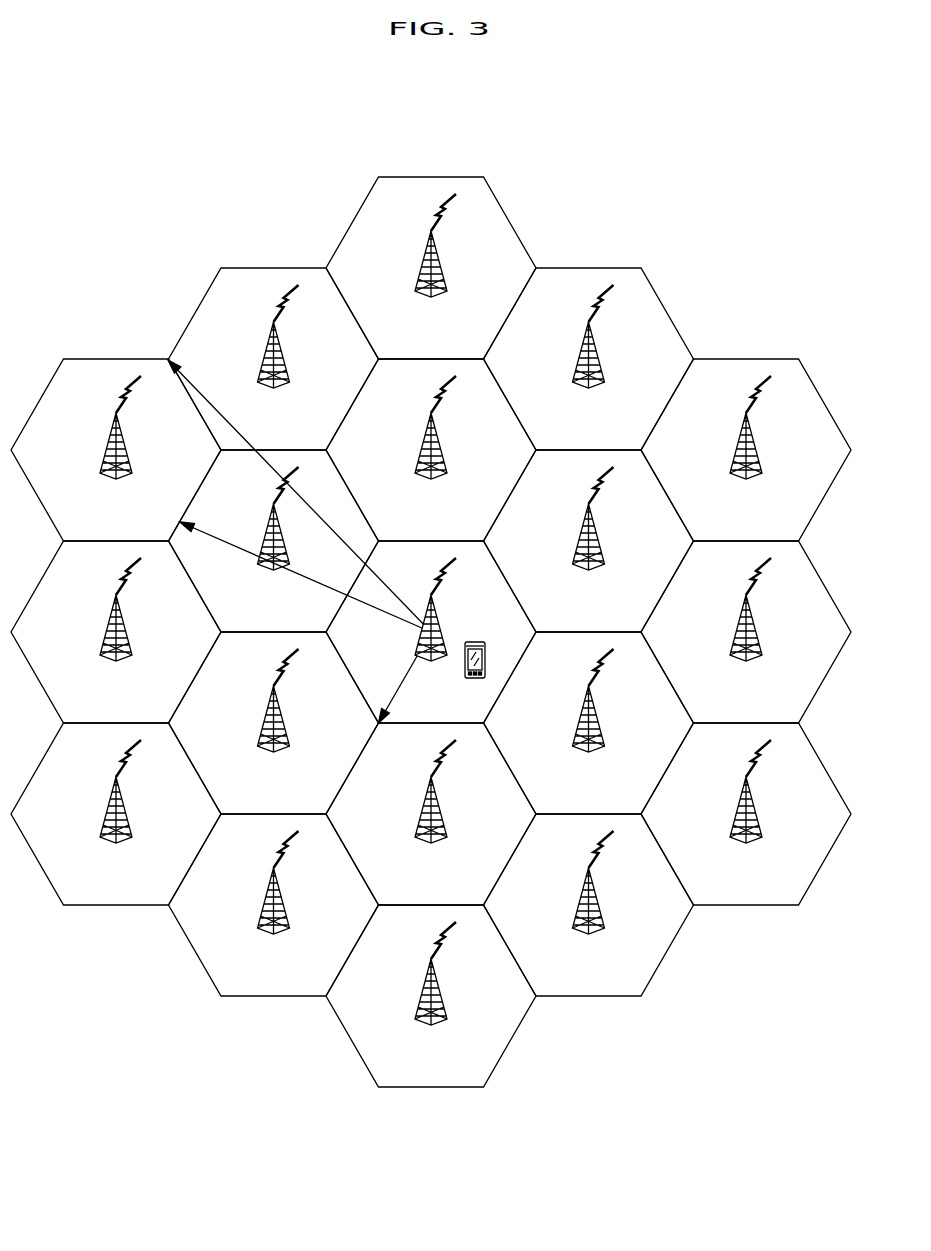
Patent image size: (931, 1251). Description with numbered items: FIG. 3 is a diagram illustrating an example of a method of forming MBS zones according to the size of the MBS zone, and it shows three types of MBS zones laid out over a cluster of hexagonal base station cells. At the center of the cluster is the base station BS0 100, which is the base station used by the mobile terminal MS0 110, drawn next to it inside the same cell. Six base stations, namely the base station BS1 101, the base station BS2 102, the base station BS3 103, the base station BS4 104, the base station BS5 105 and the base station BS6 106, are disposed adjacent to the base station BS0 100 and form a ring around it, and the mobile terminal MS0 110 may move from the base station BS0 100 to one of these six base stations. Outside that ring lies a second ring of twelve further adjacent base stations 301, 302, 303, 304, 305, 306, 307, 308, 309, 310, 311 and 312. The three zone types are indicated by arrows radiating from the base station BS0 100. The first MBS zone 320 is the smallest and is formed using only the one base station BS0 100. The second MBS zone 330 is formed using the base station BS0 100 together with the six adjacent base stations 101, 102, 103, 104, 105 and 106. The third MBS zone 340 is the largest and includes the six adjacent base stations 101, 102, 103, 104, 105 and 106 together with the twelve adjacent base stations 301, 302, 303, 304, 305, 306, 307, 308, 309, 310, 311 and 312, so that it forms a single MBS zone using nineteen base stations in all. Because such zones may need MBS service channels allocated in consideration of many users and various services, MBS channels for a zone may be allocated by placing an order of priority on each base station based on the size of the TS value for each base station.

The base station BS0 100 is at (443, 611).
The base station BS1 101 is at (444, 455).
The base station BS2 102 is at (602, 546).
The base station BS3 103 is at (602, 728).
The base station BS4 104 is at (444, 819).
The base station BS5 105 is at (286, 728).
The base station BS6 106 is at (286, 546).
The mobile terminal MS0 110 is at (485, 643).
The adjacent base station 301 is at (444, 273).
The adjacent base station 302 is at (602, 364).
The adjacent base station 303 is at (759, 455).
The adjacent base station 304 is at (759, 637).
The adjacent base station 305 is at (759, 819).
The adjacent base station 306 is at (602, 910).
The adjacent base station 307 is at (444, 1001).
The adjacent base station 308 is at (286, 910).
The adjacent base station 309 is at (129, 819).
The adjacent base station 310 is at (129, 637).
The adjacent base station 311 is at (129, 455).
The adjacent base station 312 is at (286, 364).
The MBS zone MZ[0,0] 320 is at (398, 691).
The MBS zone MZ[0,1] 330 is at (373, 607).
The MBS zone MZ[0,2] 340 is at (239, 432).